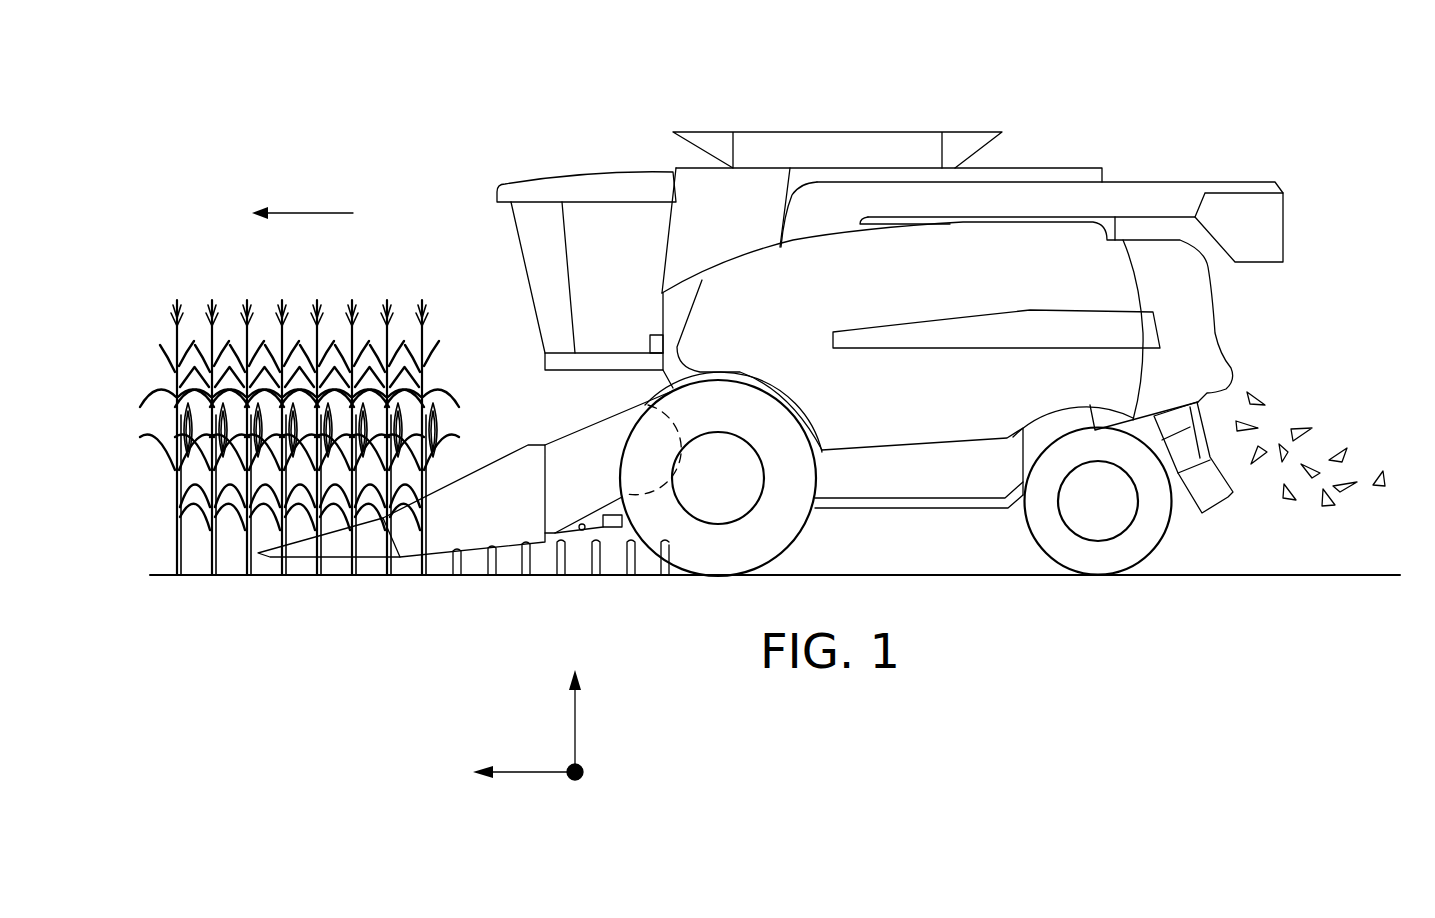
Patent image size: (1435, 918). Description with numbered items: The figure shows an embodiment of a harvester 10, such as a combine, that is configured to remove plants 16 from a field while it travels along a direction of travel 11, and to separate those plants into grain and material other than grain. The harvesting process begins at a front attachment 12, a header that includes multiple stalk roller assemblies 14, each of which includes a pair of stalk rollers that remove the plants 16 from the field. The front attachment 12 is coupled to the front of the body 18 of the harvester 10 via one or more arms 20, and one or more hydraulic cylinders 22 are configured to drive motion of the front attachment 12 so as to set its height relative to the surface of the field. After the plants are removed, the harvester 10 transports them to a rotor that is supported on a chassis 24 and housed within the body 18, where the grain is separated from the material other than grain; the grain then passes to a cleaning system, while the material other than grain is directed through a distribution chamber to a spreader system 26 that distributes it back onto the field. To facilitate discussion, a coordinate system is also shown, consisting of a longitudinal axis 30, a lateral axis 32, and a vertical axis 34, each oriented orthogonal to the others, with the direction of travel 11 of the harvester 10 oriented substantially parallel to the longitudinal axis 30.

The harvester 10 is at (513, 150).
The direction of travel 11 is at (310, 213).
The front attachment 12 is at (487, 447).
The stalk roller assemblies 14 is at (473, 560).
The plants 16 is at (245, 338).
The body 18 is at (797, 410).
The arms 20 is at (604, 440).
The hydraulic cylinders 22 is at (618, 573).
The chassis 24 is at (908, 503).
The spreader system 26 is at (1282, 408).
The longitudinal axis 30 is at (554, 744).
The lateral axis 32 is at (577, 780).
The vertical axis 34 is at (575, 725).